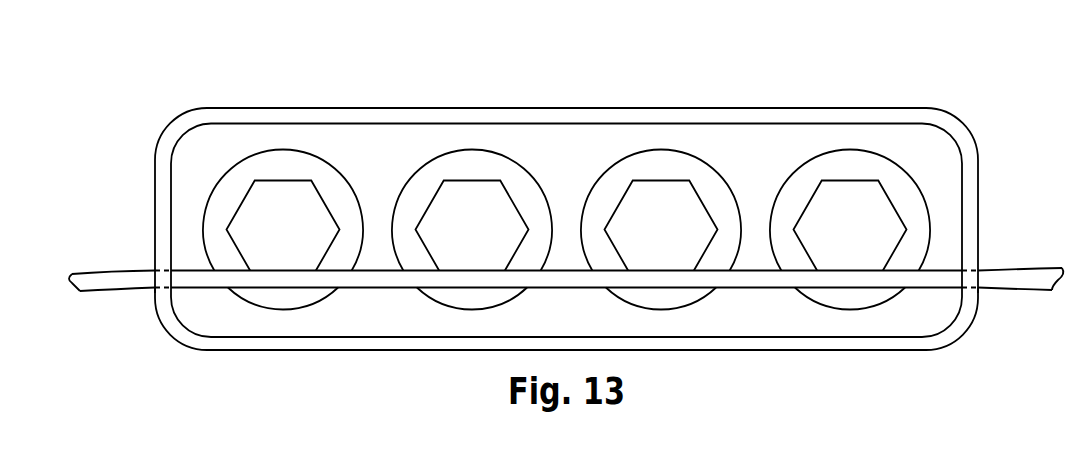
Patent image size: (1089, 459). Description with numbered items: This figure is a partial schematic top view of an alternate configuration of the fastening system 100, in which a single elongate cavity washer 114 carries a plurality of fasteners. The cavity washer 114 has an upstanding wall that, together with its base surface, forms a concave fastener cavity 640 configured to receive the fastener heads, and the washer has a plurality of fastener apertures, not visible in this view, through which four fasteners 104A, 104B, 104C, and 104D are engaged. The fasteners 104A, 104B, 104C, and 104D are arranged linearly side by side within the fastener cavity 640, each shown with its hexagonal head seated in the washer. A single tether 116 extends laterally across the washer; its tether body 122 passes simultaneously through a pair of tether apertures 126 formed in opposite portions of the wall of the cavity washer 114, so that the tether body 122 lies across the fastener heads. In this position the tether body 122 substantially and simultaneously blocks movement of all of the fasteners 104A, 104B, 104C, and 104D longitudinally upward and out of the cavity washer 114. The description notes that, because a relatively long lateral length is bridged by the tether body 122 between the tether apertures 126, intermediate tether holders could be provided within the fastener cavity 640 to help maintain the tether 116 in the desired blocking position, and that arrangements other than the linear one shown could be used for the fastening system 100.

The fastening system 100 is at (174, 73).
The fastener 104A is at (323, 141).
The fastener 104B is at (494, 140).
The fastener 104C is at (712, 140).
The fastener 104D is at (886, 140).
The cavity washer 114 is at (608, 115).
The tether 116 is at (109, 254).
The tether body 122 is at (588, 308).
The tether apertures 126 is at (152, 292).
The fastener cavity 640 is at (576, 169).